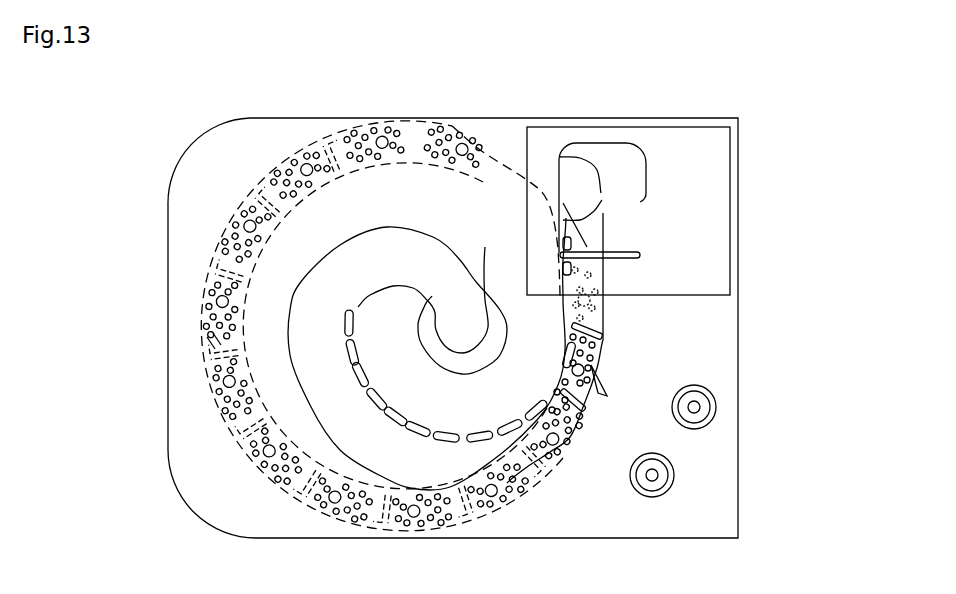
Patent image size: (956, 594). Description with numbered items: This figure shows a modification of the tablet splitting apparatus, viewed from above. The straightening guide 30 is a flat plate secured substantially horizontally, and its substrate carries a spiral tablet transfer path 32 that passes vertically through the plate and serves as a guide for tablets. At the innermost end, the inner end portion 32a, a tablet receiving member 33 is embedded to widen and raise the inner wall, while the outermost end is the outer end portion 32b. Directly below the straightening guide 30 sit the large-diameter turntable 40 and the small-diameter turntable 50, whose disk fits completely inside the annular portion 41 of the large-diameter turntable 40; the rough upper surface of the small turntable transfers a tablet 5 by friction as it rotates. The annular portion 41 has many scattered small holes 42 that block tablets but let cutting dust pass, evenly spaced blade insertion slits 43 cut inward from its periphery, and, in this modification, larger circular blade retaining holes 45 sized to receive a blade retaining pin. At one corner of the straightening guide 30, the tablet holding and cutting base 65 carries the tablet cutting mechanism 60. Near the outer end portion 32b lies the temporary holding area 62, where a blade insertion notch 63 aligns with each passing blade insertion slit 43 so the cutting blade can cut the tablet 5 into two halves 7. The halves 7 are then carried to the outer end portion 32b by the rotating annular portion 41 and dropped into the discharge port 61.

The straightening guide 30 is at (168, 238).
The large-diameter turntable 40 is at (210, 385).
The small-diameter turntable 50 is at (215, 340).
The tablet transfer path 32 is at (315, 307).
The inner end portion 32a is at (460, 322).
The tablet receiving member 33 is at (485, 247).
The outer end portion 32b is at (592, 142).
The tablet 5 is at (465, 432).
The annular portion 41 is at (602, 358).
The small holes 42 is at (605, 400).
The blade insertion slits 43 is at (602, 257).
The blade retaining holes 45 is at (553, 438).
The tablet cutting mechanism 60 is at (697, 117).
The discharge port 61 is at (586, 185).
The temporary holding area 62 is at (596, 232).
The blade insertion notch 63 is at (628, 253).
The tablet holding and cutting base 65 is at (638, 130).
The halves 7 is at (582, 240).